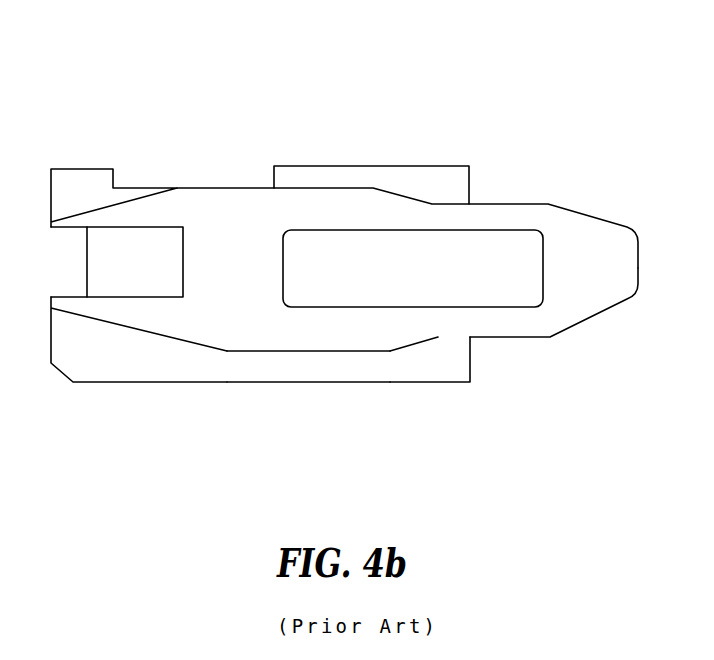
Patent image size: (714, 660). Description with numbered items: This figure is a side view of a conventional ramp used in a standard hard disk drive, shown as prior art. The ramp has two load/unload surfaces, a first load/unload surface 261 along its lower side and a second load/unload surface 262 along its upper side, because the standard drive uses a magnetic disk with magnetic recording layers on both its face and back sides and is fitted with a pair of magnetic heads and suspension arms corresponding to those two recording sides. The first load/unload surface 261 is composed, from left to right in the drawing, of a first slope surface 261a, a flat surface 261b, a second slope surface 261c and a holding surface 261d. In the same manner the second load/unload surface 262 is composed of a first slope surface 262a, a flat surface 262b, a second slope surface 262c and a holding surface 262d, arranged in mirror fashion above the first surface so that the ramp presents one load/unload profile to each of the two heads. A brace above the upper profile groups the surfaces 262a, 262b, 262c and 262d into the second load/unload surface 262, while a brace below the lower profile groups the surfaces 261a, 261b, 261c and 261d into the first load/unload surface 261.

The second load/unload surface 262 is at (98, 98).
The first slope surface 262a is at (118, 204).
The flat surface 262b is at (243, 188).
The second slope surface 262c is at (403, 197).
The holding surface 262d is at (498, 204).
The first load/unload surface 261 is at (110, 446).
The first slope surface 261a is at (176, 338).
The flat surface 261b is at (311, 351).
The second slope surface 261c is at (415, 343).
The holding surface 261d is at (512, 337).